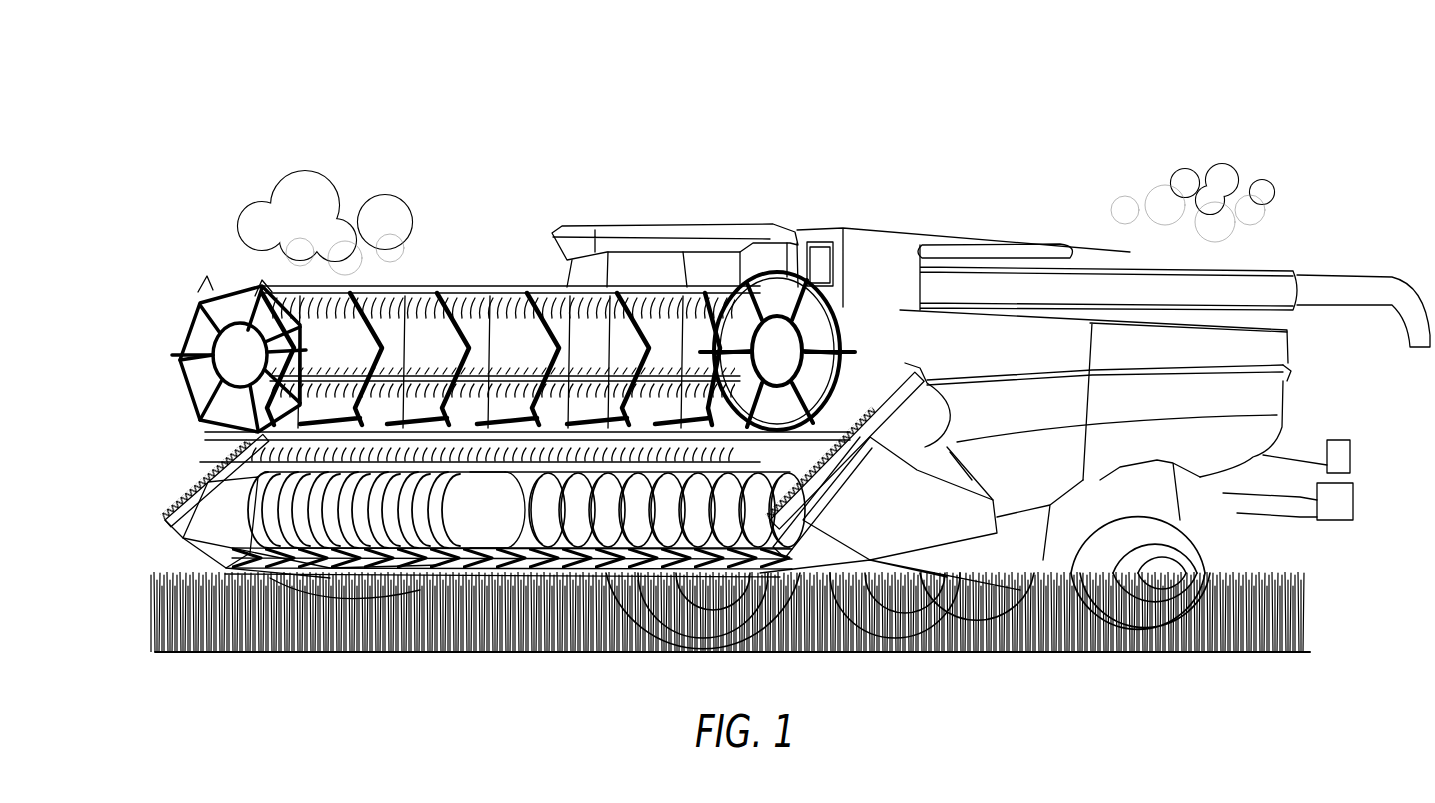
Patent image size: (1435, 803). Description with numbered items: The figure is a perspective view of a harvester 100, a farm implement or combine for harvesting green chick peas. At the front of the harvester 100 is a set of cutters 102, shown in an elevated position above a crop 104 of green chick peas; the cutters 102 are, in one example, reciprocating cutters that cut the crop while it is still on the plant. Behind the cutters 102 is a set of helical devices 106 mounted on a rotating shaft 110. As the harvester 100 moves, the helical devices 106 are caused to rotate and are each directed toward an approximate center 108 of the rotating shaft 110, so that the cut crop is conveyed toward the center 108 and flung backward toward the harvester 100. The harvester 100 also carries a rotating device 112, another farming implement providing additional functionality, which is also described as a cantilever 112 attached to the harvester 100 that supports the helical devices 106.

The harvester 100 is at (1085, 100).
The set of cutters 102 is at (487, 565).
The crop 104 is at (1314, 612).
The helical devices 106 is at (248, 488).
The approximate center 108 is at (468, 500).
The rotating shaft 110 is at (457, 525).
The rotating device 112 is at (175, 282).